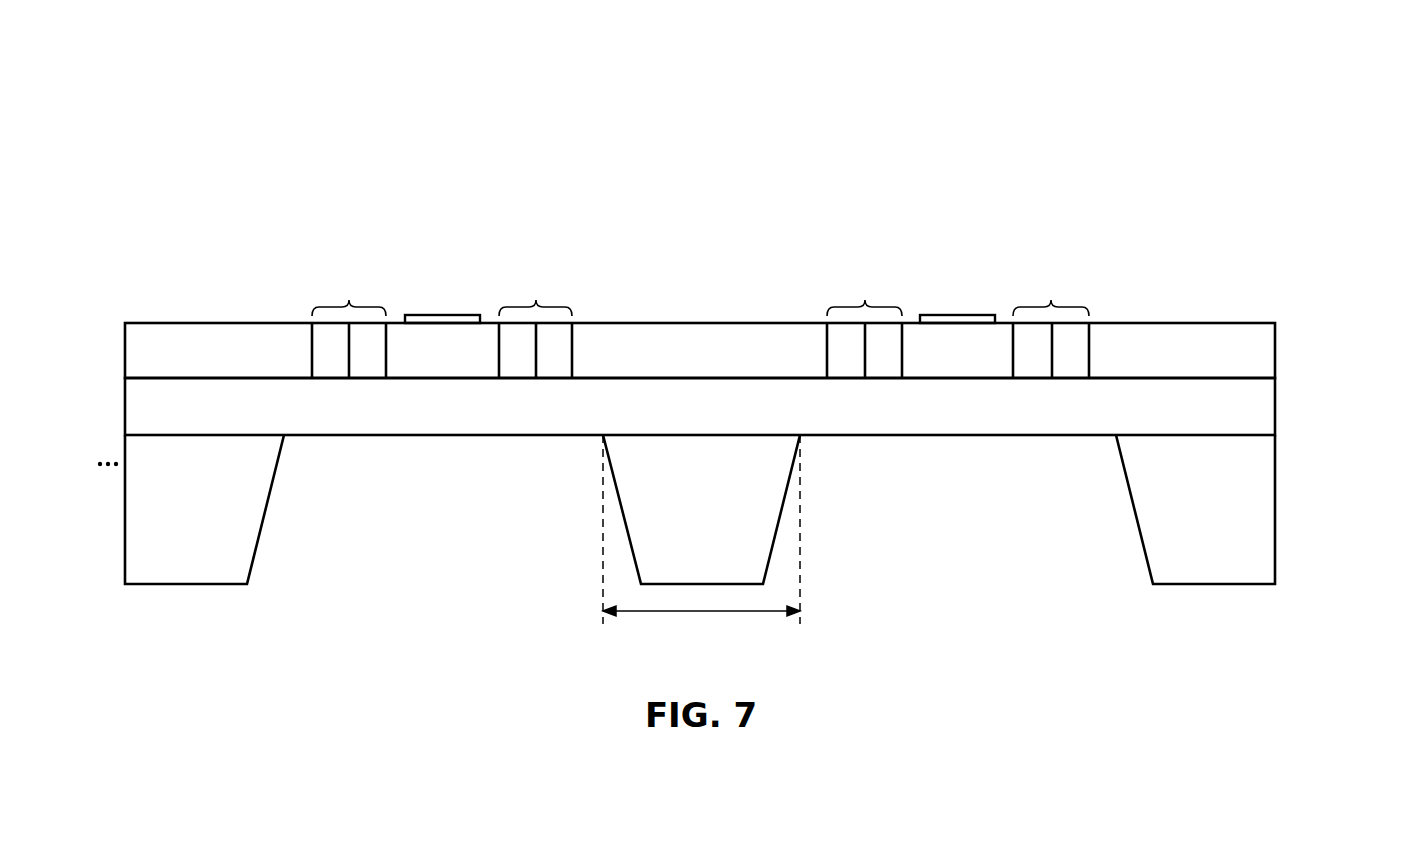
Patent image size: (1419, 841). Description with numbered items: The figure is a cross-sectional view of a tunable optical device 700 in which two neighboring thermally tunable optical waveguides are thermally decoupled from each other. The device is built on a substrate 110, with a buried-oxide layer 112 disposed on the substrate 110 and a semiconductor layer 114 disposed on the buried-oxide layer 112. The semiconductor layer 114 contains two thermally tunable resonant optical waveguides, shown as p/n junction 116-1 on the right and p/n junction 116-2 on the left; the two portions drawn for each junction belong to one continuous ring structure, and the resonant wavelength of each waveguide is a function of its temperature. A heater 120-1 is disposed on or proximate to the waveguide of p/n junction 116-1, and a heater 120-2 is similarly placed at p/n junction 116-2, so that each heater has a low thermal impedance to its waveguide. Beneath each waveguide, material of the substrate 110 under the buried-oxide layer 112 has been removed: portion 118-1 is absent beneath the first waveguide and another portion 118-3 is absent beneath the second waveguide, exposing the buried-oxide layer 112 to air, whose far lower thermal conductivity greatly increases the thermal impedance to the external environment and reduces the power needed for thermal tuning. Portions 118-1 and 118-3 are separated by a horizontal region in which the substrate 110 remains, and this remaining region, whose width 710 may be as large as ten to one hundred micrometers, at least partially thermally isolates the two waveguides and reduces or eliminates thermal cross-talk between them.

The tunable optical device 700 is at (1162, 105).
The buried-oxide layer 112 is at (666, 398).
The semiconductor layer 114 is at (260, 352).
The p/n junction 116-2 is at (536, 300).
The p/n junction 116-1 is at (865, 300).
The portion 118-3 is at (438, 488).
The portion 118-1 is at (968, 491).
The heater 120-2 is at (445, 318).
The heater 120-1 is at (944, 318).
The substrate 110 is at (747, 460).
The width 710 is at (713, 611).